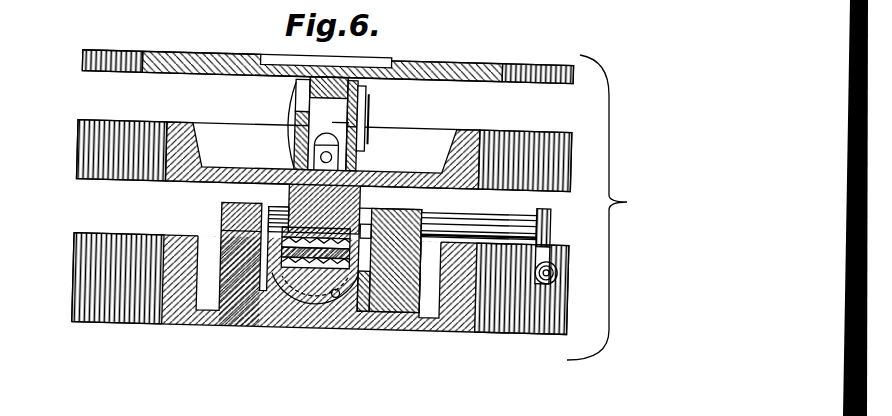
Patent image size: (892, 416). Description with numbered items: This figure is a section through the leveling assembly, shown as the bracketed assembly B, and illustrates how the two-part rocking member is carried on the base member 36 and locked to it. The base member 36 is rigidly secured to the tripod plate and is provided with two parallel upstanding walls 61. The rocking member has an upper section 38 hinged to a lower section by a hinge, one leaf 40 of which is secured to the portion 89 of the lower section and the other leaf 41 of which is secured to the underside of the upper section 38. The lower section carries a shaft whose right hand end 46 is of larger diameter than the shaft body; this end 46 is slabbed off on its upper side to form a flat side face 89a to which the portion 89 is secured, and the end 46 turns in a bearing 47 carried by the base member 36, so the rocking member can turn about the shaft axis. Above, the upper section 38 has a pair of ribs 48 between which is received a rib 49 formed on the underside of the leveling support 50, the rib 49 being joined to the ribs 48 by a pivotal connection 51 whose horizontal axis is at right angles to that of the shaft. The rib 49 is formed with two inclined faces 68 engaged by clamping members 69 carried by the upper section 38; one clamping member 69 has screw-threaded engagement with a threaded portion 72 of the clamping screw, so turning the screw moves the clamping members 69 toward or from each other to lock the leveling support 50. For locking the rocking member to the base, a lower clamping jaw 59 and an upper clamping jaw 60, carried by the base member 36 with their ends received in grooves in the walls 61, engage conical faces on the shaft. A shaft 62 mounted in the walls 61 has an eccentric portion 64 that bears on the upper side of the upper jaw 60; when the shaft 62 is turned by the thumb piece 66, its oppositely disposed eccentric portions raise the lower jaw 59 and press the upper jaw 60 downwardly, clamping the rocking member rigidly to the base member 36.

The leveling support 50 is at (536, 68).
The upper section 38 is at (90, 142).
The base member 36 is at (508, 303).
The upstanding walls 61 is at (243, 232).
The hinge leaf 41 is at (262, 258).
The hinge leaf 40 is at (288, 268).
The right hand end of the shaft 46 is at (317, 290).
The portion of the lower section 89 is at (334, 305).
The flat side face 89a is at (297, 322).
The bearing 47 is at (339, 300).
The upper clamping jaw 60 is at (402, 247).
The eccentric portion 64 is at (364, 246).
The lower clamping jaw 59 is at (393, 295).
The shaft 62 is at (487, 223).
The thumb piece 66 is at (548, 253).
The pivotal connection 51 is at (291, 110).
The clamping members 69 is at (293, 125).
The rib 49 is at (330, 104).
The ribs 48 is at (322, 141).
The screw-threaded portion 72 is at (319, 157).
The inclined faces 68 is at (363, 121).
The assembly B is at (606, 207).